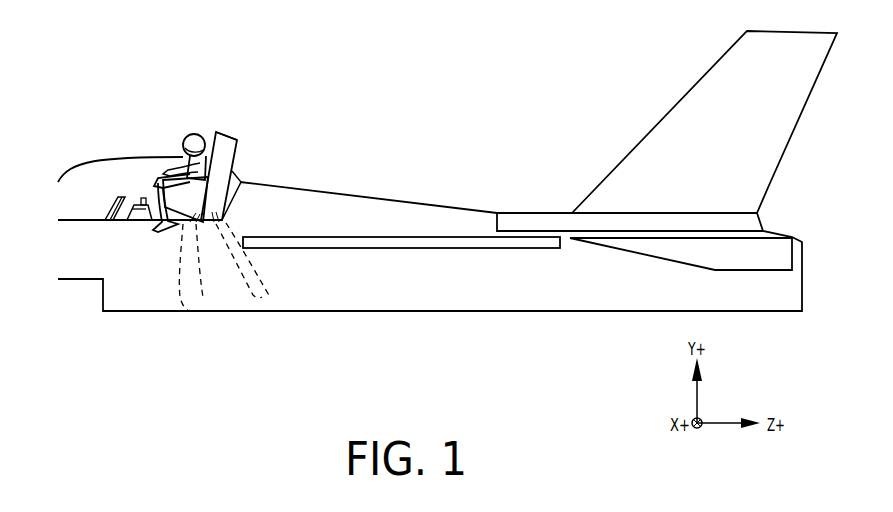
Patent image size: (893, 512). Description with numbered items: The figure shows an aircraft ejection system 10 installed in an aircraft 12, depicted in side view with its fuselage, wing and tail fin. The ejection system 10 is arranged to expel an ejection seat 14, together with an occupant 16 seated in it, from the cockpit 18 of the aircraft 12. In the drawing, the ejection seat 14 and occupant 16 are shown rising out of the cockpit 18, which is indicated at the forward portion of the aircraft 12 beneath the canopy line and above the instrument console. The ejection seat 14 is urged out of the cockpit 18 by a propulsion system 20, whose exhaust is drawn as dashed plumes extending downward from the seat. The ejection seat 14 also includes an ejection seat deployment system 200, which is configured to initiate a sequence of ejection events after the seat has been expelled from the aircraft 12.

The aircraft ejection system 10 is at (366, 101).
The aircraft 12 is at (464, 289).
The ejection seat 14 is at (231, 146).
The occupant 16 is at (190, 143).
The cockpit 18 is at (93, 203).
The propulsion system 20 is at (187, 268).
The ejection seat deployment system 200 is at (218, 175).